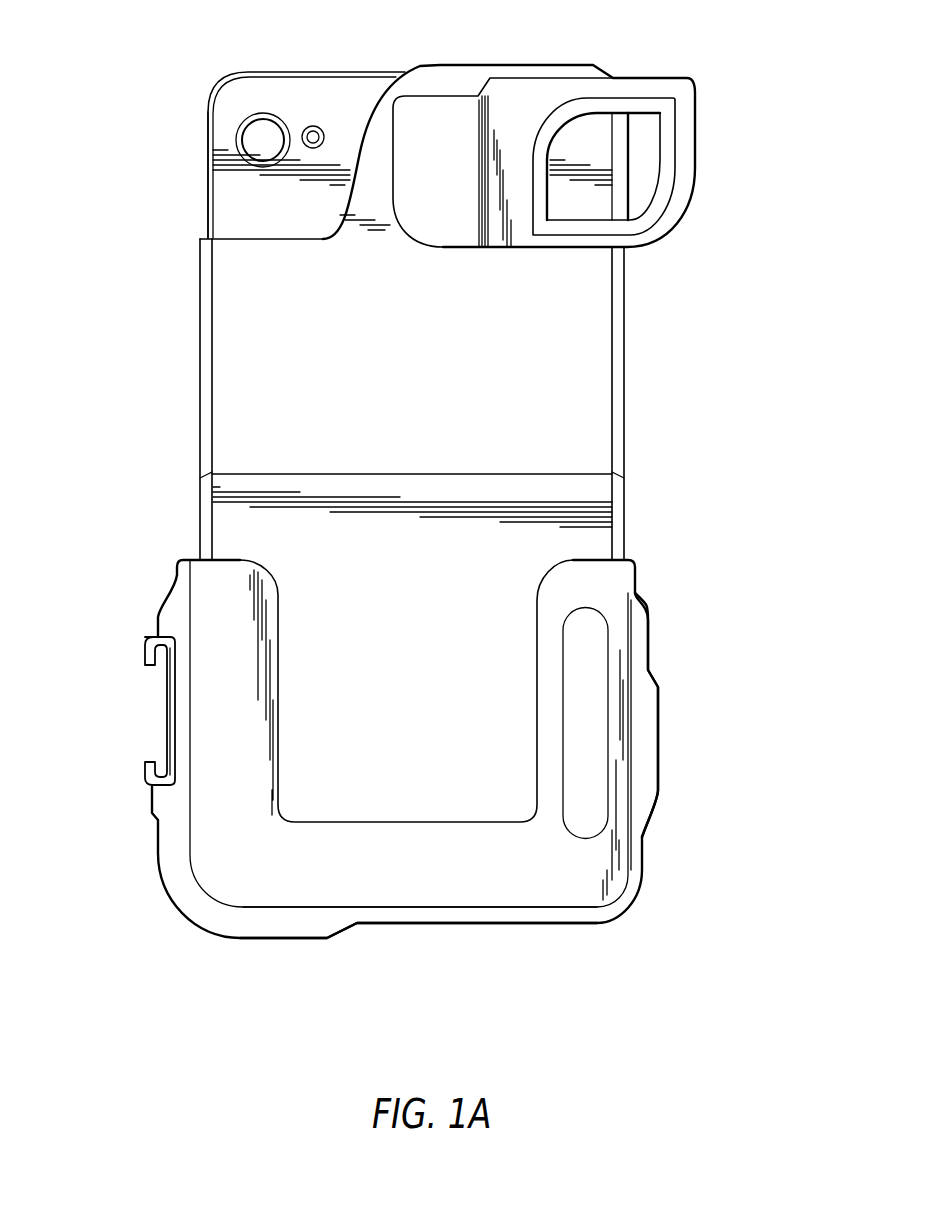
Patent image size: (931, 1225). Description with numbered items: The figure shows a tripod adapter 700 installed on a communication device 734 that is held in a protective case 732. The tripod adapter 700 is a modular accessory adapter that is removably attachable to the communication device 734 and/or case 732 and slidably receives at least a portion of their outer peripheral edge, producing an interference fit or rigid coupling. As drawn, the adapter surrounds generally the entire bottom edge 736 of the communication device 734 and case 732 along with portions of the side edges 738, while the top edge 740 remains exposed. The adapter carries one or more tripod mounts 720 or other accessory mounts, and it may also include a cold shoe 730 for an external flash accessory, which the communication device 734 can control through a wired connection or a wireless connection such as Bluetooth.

The tripod adapter 700 is at (157, 903).
The tripod mount 720 is at (660, 732).
The cold shoe 730 is at (147, 653).
The protective case 732 is at (237, 387).
The communication device 734 is at (207, 193).
The bottom edge 736 is at (448, 936).
The side edges 738 is at (198, 312).
The top edge 740 is at (288, 67).